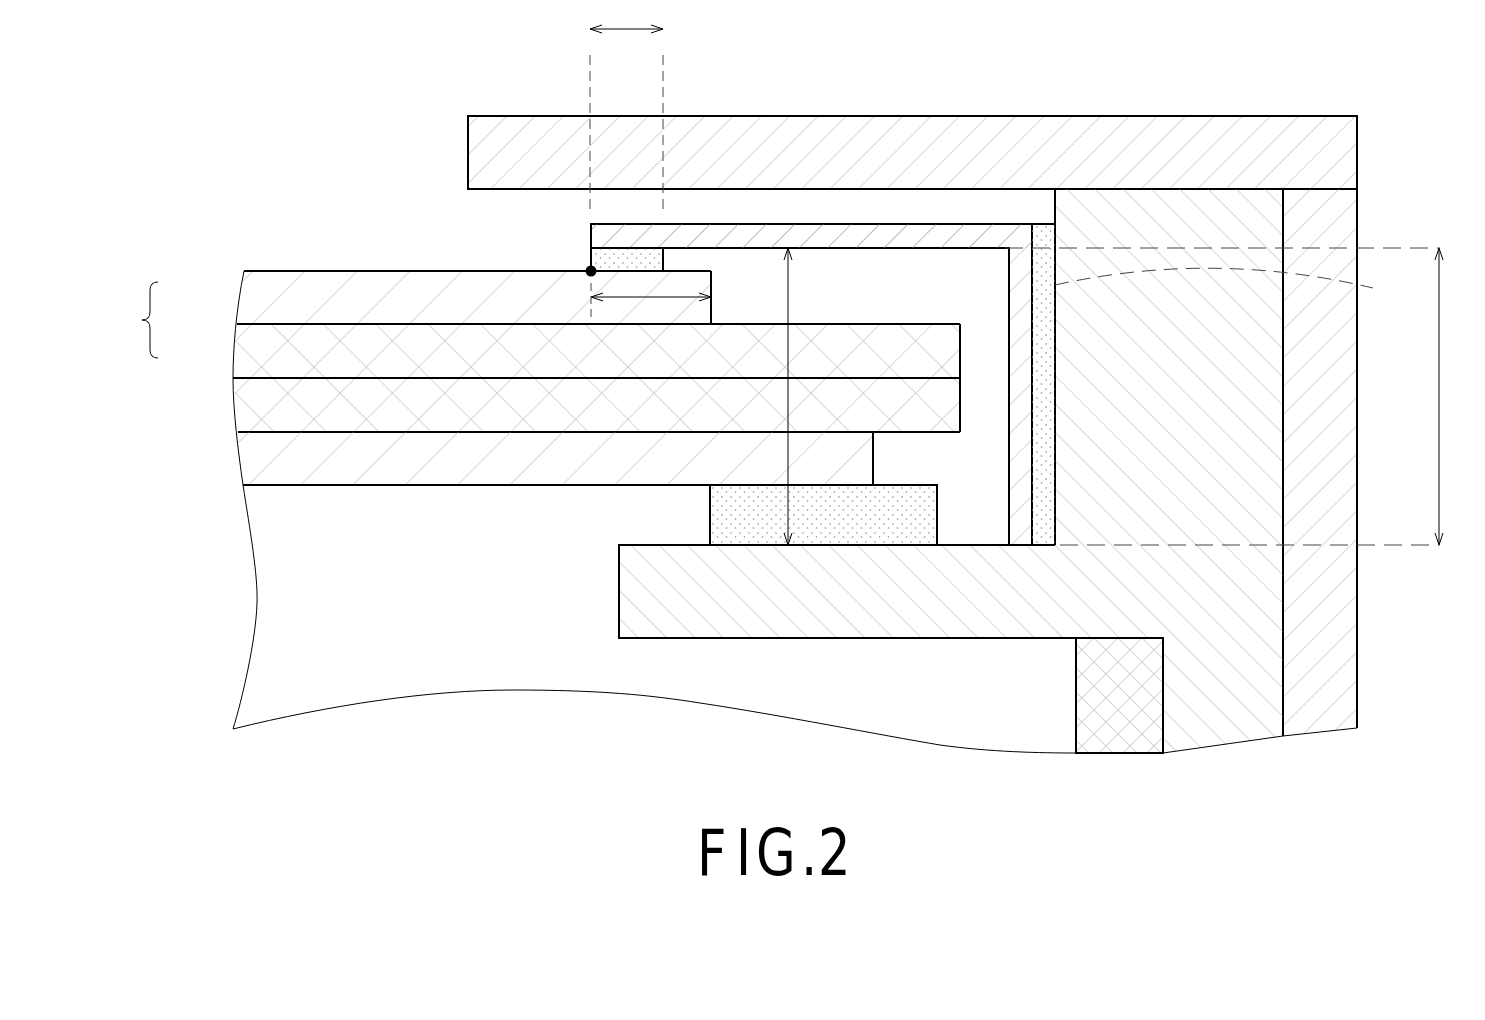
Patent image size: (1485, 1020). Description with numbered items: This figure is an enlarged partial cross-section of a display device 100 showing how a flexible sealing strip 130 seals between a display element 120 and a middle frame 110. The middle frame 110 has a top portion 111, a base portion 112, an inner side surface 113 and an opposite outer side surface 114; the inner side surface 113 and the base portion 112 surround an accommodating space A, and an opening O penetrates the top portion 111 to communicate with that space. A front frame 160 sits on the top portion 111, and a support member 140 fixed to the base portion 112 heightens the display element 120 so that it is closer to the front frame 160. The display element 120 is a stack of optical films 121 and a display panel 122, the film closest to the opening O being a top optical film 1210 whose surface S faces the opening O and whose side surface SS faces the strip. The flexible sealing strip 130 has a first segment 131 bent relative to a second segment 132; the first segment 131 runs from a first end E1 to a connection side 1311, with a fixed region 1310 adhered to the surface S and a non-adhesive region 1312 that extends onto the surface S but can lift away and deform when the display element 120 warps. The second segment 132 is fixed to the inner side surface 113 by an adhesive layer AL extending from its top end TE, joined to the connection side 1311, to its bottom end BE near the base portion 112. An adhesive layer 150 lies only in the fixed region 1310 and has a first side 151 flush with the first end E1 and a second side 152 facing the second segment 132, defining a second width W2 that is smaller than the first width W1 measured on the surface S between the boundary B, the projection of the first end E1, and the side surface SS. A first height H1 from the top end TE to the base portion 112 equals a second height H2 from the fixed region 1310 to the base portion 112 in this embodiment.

The display device 100 is at (237, 140).
The middle frame 110 is at (841, 487).
The top portion 111 is at (1283, 211).
The base portion 112 is at (862, 593).
The inner side surface 113 is at (1057, 318).
The outer side surface 114 is at (1271, 414).
The display element 120 is at (530, 449).
The optical films 121 is at (431, 247).
The display panel 122 is at (247, 363).
The top optical film 1210 is at (433, 270).
The flexible sealing strip 130 is at (838, 277).
The first segment 131 is at (838, 289).
The second segment 132 is at (1018, 298).
The fixed region 1310 is at (627, 238).
The connection side 1311 is at (1020, 228).
The non-adhesive region 1312 is at (867, 238).
The support member 140 is at (897, 528).
The adhesive layer 150 is at (606, 148).
The first side 151 is at (591, 257).
The second side 152 is at (663, 252).
The front frame 160 is at (1335, 145).
The surface S is at (283, 268).
The opening O is at (372, 190).
The first end E1 is at (591, 233).
The side surface SS is at (723, 291).
The first width W1 is at (647, 300).
The second width W2 is at (626, 107).
The first height H1 is at (1453, 396).
The second height H2 is at (788, 300).
The top end TE is at (1222, 276).
The bottom end BE is at (1020, 547).
The adhesive layer AL is at (1047, 487).
The accommodating space A is at (973, 505).
The boundary B is at (591, 273).